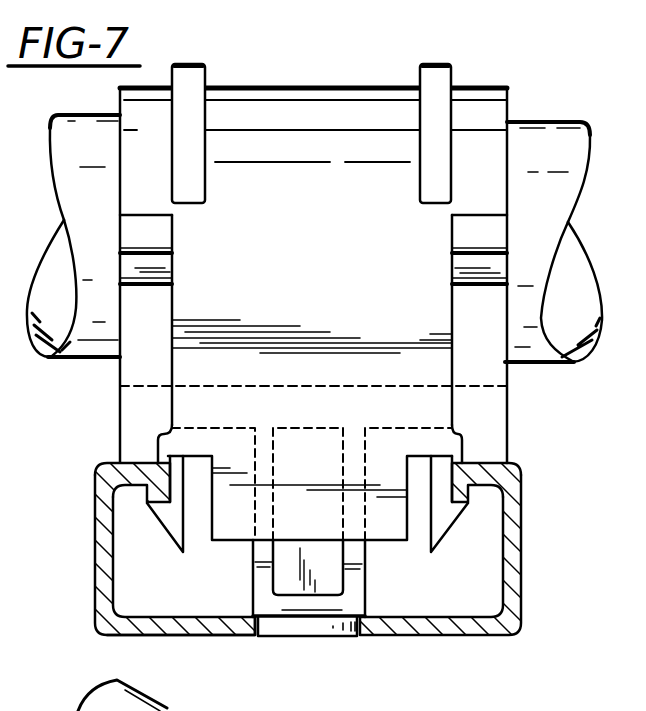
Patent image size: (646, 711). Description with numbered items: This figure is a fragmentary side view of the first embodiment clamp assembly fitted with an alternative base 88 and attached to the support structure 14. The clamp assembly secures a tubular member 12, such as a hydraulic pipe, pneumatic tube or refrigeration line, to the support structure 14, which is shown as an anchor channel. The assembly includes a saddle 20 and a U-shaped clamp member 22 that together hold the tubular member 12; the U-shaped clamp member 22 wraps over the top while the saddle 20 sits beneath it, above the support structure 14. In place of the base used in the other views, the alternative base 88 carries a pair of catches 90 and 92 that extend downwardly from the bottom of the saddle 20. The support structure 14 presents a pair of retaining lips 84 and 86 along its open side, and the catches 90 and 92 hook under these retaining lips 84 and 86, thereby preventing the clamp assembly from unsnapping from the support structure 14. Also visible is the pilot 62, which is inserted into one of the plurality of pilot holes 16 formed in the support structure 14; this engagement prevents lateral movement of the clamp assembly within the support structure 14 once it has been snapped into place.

The tubular member 12 is at (558, 122).
The support structure 14 is at (522, 595).
The pilot holes 16 is at (270, 630).
The saddle 20 is at (507, 428).
The U-shaped clamp member 22 is at (352, 90).
The pilot 62 is at (330, 645).
The retaining lip 84 is at (522, 498).
The retaining lip 86 is at (115, 478).
The alternative base 88 is at (366, 580).
The catch 90 is at (447, 525).
The catch 92 is at (165, 515).